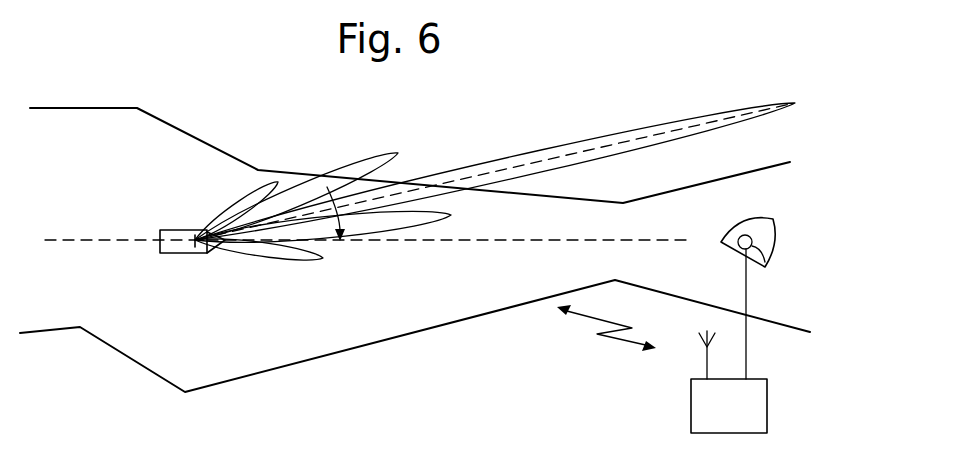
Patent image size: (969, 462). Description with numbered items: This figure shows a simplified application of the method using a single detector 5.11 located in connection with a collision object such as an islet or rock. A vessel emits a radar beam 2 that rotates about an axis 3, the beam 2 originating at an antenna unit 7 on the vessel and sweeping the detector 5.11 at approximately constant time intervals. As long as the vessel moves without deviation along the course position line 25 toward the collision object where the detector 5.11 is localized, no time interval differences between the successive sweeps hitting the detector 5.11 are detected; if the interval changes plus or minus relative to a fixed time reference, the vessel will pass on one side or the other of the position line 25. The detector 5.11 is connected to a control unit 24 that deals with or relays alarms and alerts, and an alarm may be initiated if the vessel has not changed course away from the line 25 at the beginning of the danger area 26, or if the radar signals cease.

The radar beam 2 is at (561, 145).
The axis 3 is at (183, 253).
The radar antenna 7 is at (180, 231).
The course position line 25 is at (430, 242).
The danger area 26 is at (612, 257).
The detector 5.11 is at (768, 262).
The control unit 24 is at (703, 409).